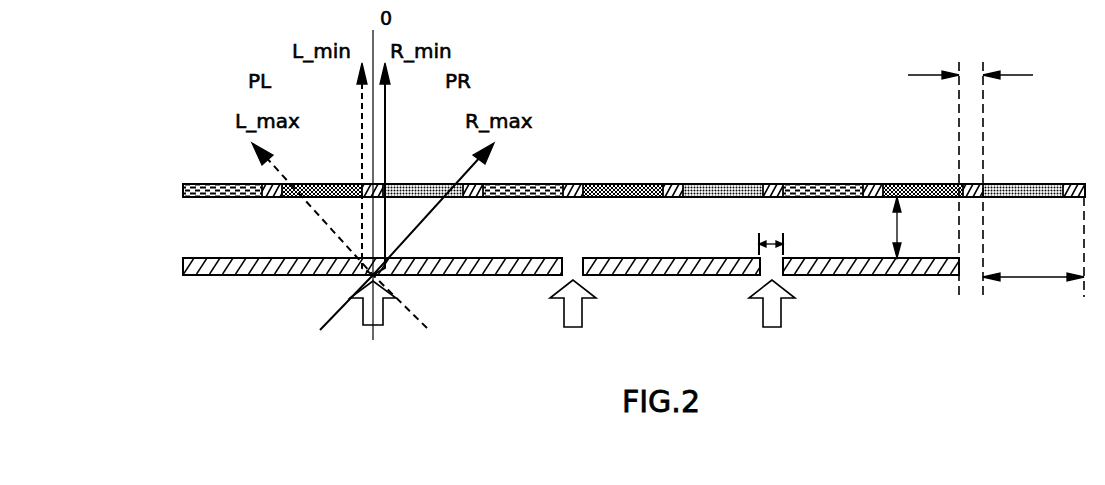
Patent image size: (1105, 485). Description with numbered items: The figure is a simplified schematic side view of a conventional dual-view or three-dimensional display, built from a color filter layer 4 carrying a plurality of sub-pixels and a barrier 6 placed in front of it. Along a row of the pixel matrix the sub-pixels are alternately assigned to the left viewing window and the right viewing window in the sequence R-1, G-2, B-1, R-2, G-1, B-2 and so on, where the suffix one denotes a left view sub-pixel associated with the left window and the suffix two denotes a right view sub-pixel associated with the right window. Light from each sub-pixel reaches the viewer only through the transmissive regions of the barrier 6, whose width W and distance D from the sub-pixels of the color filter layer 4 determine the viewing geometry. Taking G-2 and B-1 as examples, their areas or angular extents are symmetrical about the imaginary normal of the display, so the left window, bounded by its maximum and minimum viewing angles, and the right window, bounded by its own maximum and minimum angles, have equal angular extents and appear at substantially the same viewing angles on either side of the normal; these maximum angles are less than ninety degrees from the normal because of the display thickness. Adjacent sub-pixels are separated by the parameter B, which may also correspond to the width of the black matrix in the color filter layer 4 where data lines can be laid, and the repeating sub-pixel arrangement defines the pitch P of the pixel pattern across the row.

The color filter layer 4 is at (183, 192).
The barrier 6 is at (183, 268).
The red left view sub-pixel R-1 is at (226, 184).
The green right view sub-pixel G-2 is at (329, 184).
The blue left view sub-pixel B-1 is at (436, 184).
The red right view sub-pixel R-2 is at (548, 184).
The green left view sub-pixel G-1 is at (637, 184).
The blue right view sub-pixel B-2 is at (741, 184).
The width of transmissive regions W is at (771, 232).
The distance D is at (905, 227).
The separation of sub-pixels B is at (970, 167).
The pixel pitch P is at (1033, 247).